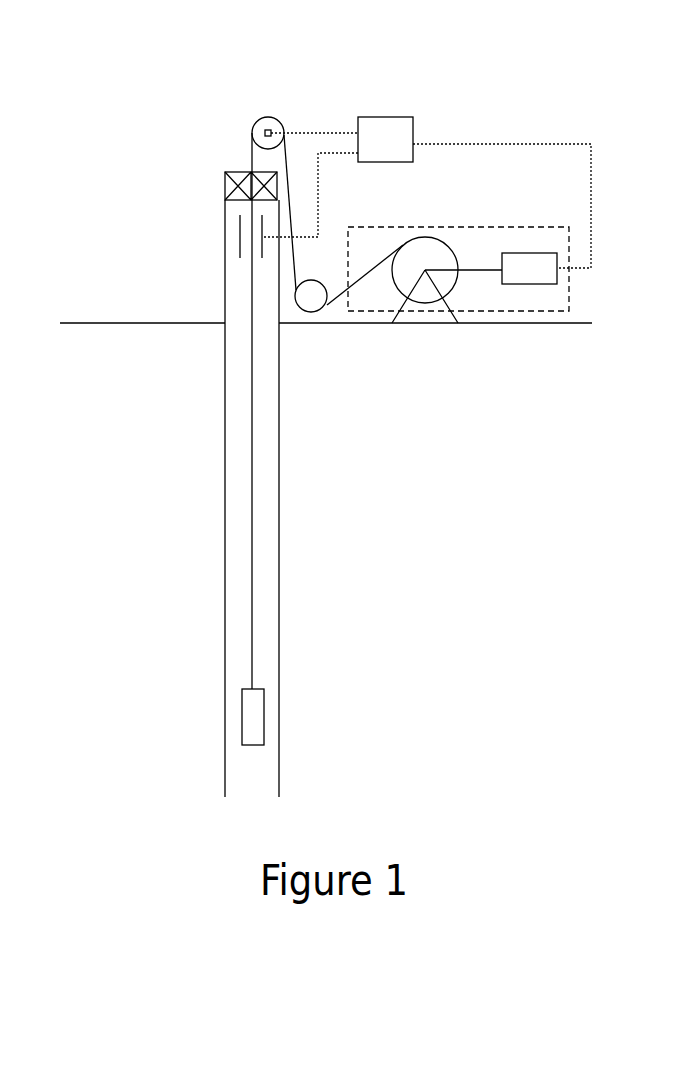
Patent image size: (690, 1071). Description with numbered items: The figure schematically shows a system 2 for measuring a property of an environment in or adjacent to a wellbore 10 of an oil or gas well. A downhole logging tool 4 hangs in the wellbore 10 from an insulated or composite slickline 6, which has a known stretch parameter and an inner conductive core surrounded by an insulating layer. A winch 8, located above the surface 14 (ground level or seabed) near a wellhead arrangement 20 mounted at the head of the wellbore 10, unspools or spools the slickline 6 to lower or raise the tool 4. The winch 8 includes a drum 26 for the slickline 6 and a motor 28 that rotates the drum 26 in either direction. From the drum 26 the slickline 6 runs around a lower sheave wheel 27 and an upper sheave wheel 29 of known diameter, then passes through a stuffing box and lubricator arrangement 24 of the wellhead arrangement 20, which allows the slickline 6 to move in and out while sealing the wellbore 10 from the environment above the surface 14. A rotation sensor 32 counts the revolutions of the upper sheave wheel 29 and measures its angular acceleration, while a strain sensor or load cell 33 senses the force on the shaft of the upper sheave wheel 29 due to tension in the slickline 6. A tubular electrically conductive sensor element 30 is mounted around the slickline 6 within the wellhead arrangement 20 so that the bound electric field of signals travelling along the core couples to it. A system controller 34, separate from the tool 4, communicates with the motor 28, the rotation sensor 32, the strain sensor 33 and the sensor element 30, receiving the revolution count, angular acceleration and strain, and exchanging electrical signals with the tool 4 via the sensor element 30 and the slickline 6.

The system 2 is at (428, 493).
The downhole logging tool 4 is at (255, 722).
The insulated or composite slickline 6 is at (248, 460).
The winch 8 is at (504, 315).
The wellbore 10 is at (240, 405).
The surface 14 is at (562, 323).
The wellhead arrangement 20 is at (165, 232).
The stuffing box and lubricator arrangement 24 is at (223, 187).
The drum 26 is at (452, 287).
The lower sheave wheel 27 is at (312, 312).
The motor 28 is at (557, 277).
The upper sheave wheel 29 is at (271, 117).
The tubular electrically conductive sensor element 30 is at (236, 250).
The rotation sensor 32 is at (277, 126).
The strain sensor or load cell 33 is at (268, 133).
The system controller 34 is at (383, 117).